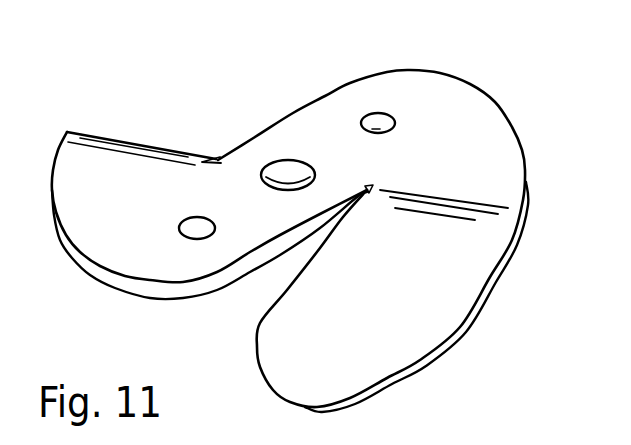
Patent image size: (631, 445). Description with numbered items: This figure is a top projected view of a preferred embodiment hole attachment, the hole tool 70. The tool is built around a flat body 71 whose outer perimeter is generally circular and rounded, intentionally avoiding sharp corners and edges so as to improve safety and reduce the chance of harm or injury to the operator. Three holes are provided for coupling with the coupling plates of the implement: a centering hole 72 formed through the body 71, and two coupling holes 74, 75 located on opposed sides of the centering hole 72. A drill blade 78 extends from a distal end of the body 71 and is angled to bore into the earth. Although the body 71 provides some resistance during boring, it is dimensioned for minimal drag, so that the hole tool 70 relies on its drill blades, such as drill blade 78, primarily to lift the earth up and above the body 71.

The hole tool 70 is at (532, 115).
The body 71 is at (256, 162).
The centering hole 72 is at (294, 167).
The coupling hole 74 is at (382, 124).
The coupling hole 75 is at (188, 231).
The drill blade 78 is at (383, 313).